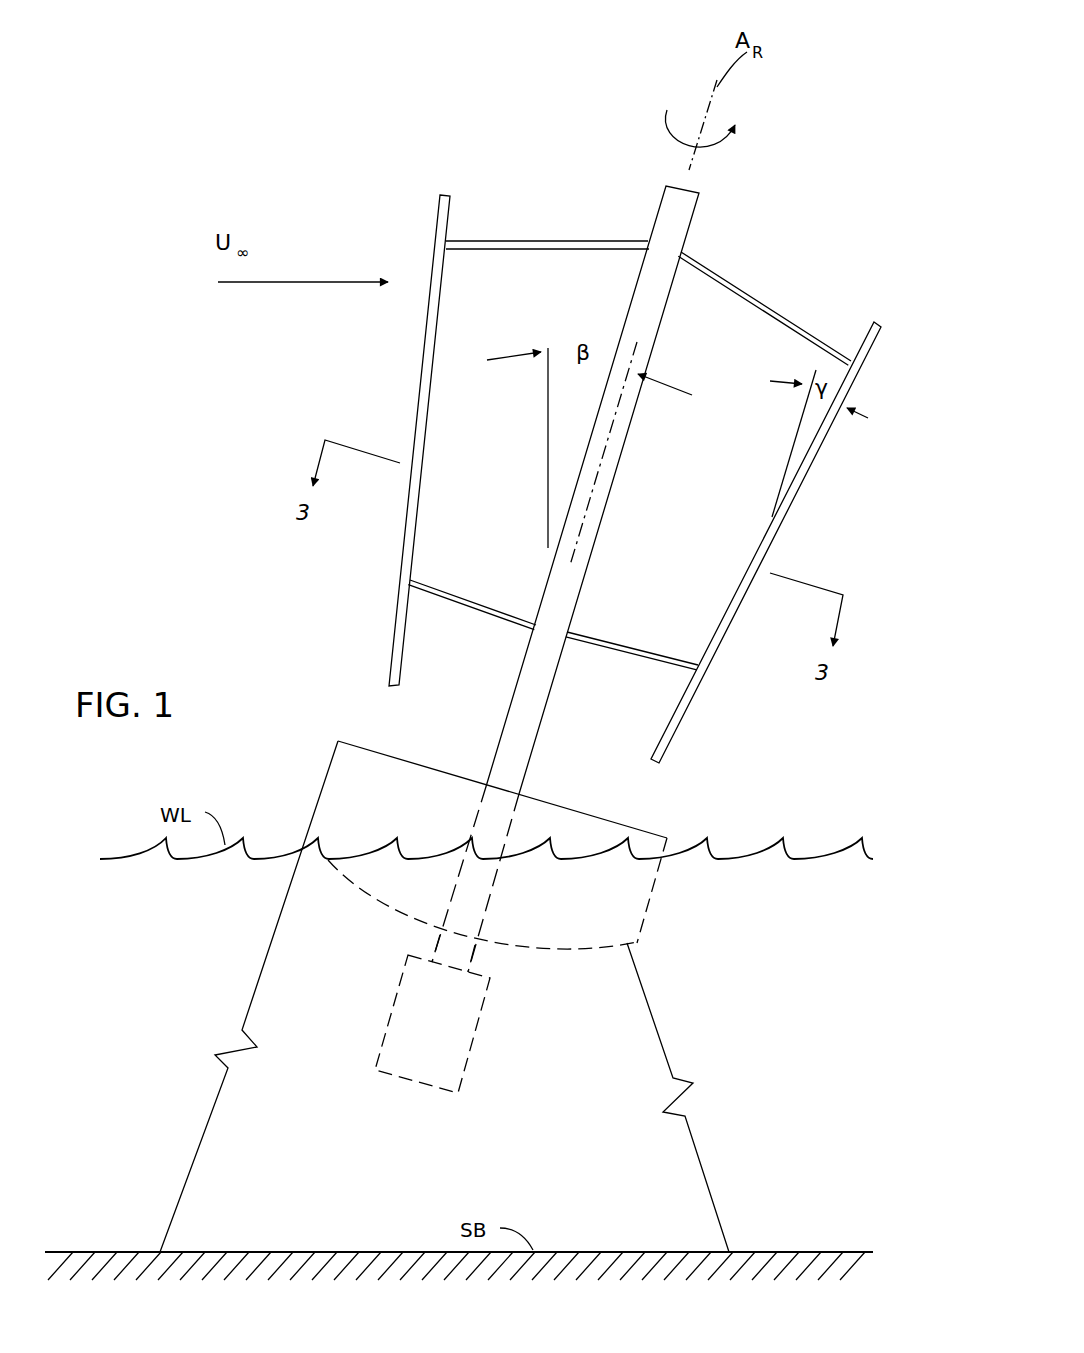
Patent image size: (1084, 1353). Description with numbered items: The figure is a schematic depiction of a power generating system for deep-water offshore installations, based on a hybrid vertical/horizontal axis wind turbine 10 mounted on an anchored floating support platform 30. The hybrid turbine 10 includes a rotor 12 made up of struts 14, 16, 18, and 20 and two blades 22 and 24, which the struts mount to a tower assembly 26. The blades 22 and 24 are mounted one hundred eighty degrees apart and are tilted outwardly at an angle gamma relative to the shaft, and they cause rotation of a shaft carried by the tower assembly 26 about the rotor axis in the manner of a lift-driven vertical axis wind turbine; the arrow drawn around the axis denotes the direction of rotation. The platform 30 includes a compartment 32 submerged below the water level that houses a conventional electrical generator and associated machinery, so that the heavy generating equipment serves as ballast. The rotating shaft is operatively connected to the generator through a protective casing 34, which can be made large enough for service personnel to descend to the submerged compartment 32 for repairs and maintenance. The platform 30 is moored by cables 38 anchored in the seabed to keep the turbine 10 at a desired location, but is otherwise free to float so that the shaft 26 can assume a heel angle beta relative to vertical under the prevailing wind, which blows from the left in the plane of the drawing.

The hybrid vertical/horizontal axis wind turbine 10 is at (838, 186).
The rotor 12 is at (675, 722).
The strut 14 is at (732, 300).
The strut 16 is at (652, 650).
The strut 18 is at (508, 249).
The strut 20 is at (487, 605).
The blade 22 is at (787, 500).
The blade 24 is at (418, 389).
The tower assembly 26 is at (618, 455).
The floating support platform 30 is at (652, 832).
The compartment 32 is at (452, 1060).
The protective casing 34 is at (455, 916).
The cables 38 is at (197, 1148).